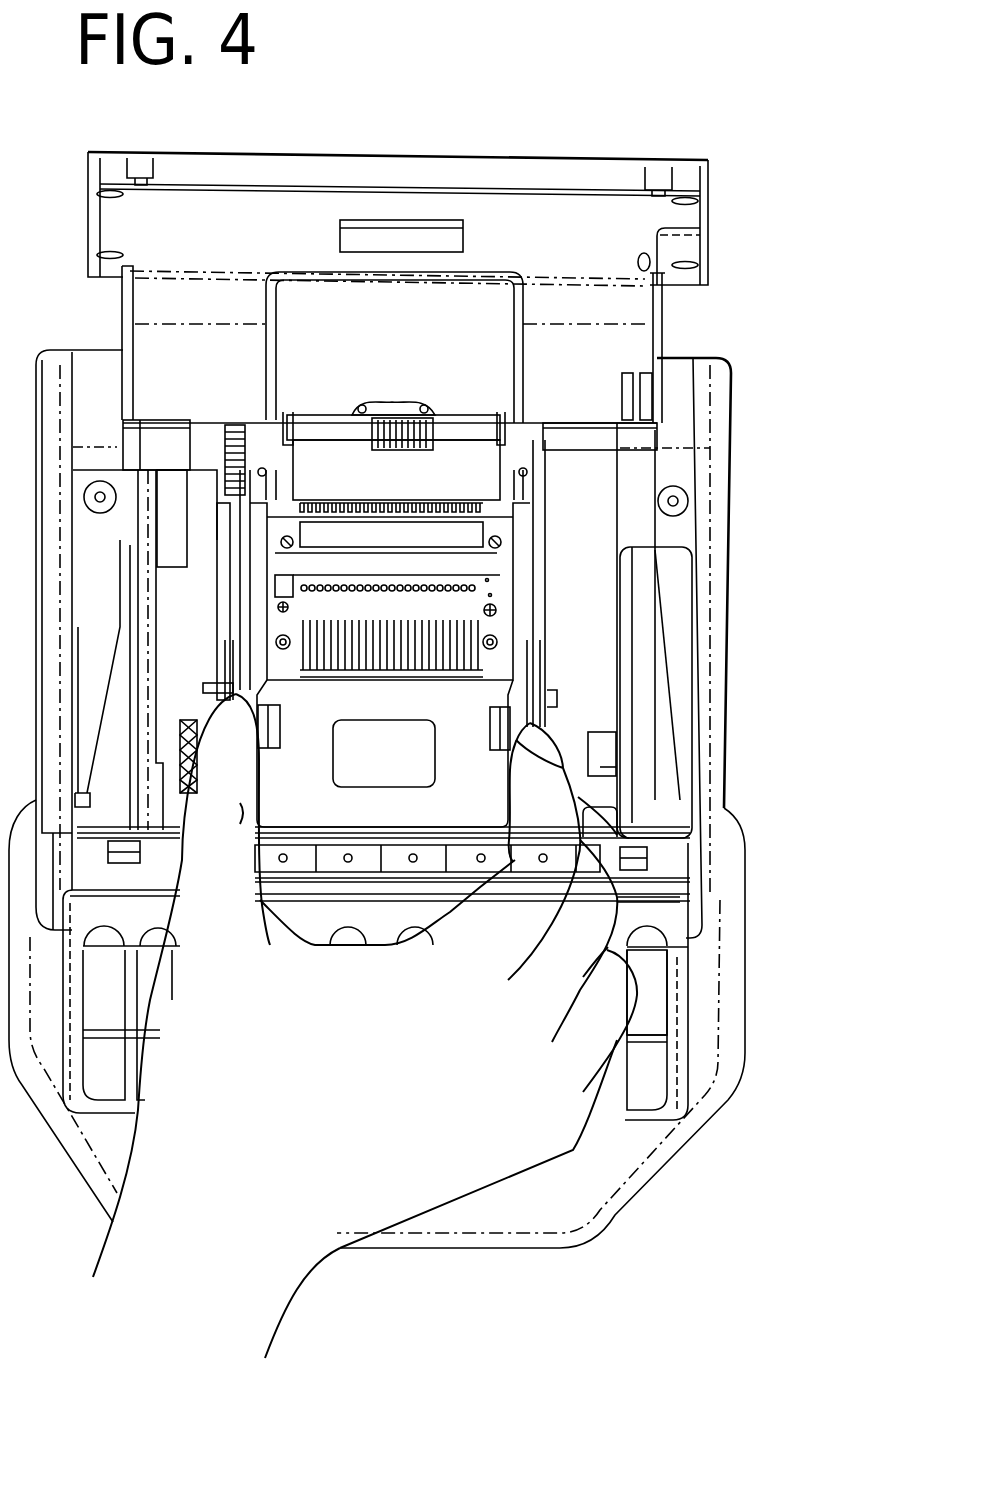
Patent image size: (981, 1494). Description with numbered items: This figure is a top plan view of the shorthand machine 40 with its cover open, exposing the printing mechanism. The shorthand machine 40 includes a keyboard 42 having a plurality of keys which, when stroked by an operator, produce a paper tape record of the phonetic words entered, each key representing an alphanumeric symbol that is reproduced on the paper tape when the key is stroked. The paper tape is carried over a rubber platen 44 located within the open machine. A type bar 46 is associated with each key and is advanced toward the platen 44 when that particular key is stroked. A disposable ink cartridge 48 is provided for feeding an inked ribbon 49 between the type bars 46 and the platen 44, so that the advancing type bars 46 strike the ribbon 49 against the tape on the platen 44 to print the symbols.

The shorthand machine 40 is at (758, 1120).
The keyboard 42 is at (653, 997).
The rubber platen 44 is at (477, 466).
The type bar 46 is at (460, 532).
The disposable ink cartridge 48 is at (478, 772).
The inked ribbon 49 is at (345, 508).